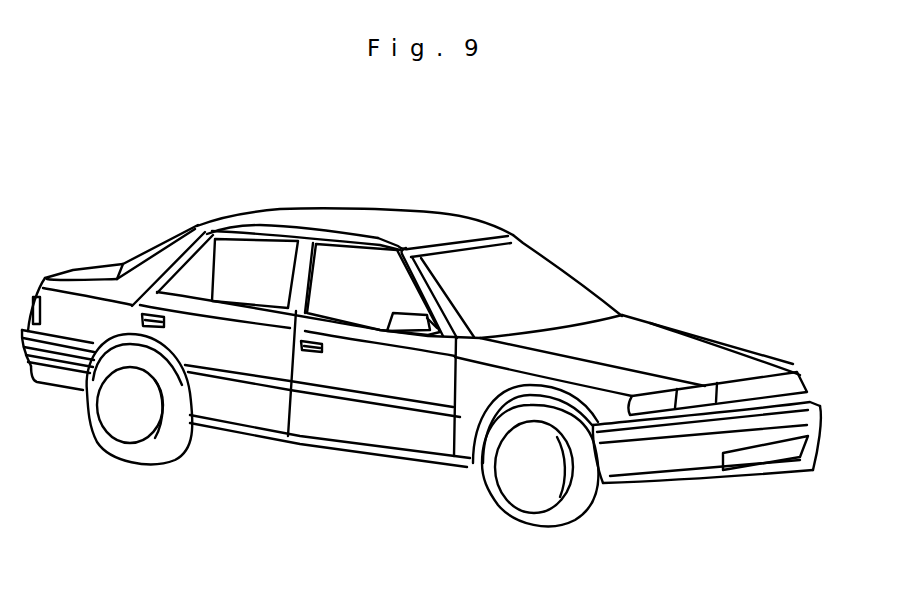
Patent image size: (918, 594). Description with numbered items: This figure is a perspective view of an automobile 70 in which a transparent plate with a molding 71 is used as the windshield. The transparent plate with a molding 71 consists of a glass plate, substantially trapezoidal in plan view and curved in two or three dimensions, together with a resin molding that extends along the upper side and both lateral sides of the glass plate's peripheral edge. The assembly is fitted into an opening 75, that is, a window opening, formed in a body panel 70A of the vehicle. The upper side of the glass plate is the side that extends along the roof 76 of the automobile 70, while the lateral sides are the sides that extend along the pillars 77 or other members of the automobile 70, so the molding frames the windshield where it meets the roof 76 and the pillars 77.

The automobile 70 is at (652, 240).
The body panel 70A is at (477, 232).
The transparent plate with a molding 71 is at (540, 288).
The opening 75 is at (523, 251).
The roof 76 is at (437, 232).
The pillars 77 is at (410, 280).